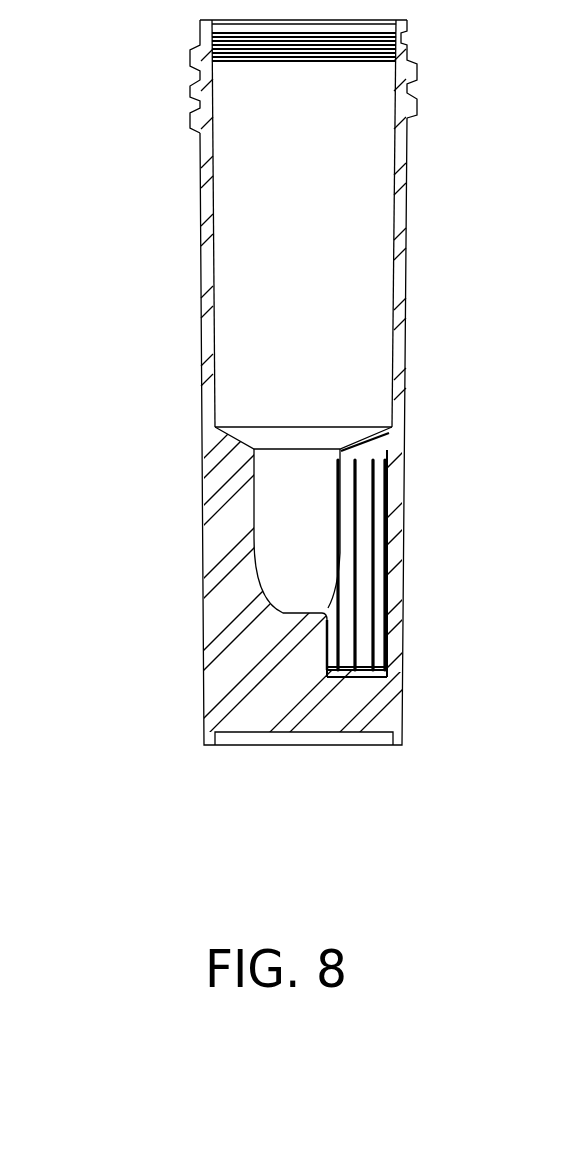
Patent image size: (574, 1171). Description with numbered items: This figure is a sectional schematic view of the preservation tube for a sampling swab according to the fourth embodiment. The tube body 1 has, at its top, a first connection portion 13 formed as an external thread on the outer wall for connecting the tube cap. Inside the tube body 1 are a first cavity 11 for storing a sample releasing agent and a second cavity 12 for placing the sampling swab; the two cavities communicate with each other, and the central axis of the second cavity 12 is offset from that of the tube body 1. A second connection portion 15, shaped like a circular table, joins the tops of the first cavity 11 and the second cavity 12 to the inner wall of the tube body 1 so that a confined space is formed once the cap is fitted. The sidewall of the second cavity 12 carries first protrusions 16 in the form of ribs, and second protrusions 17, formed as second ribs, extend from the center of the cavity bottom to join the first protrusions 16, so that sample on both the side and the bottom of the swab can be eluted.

The tube body 1 is at (202, 292).
The first cavity 11 is at (280, 538).
The second cavity 12 is at (357, 583).
The first connection portion 13 is at (191, 63).
The second connection portion 15 is at (240, 448).
The first protrusions 16 is at (389, 505).
The second protrusions 17 is at (398, 676).